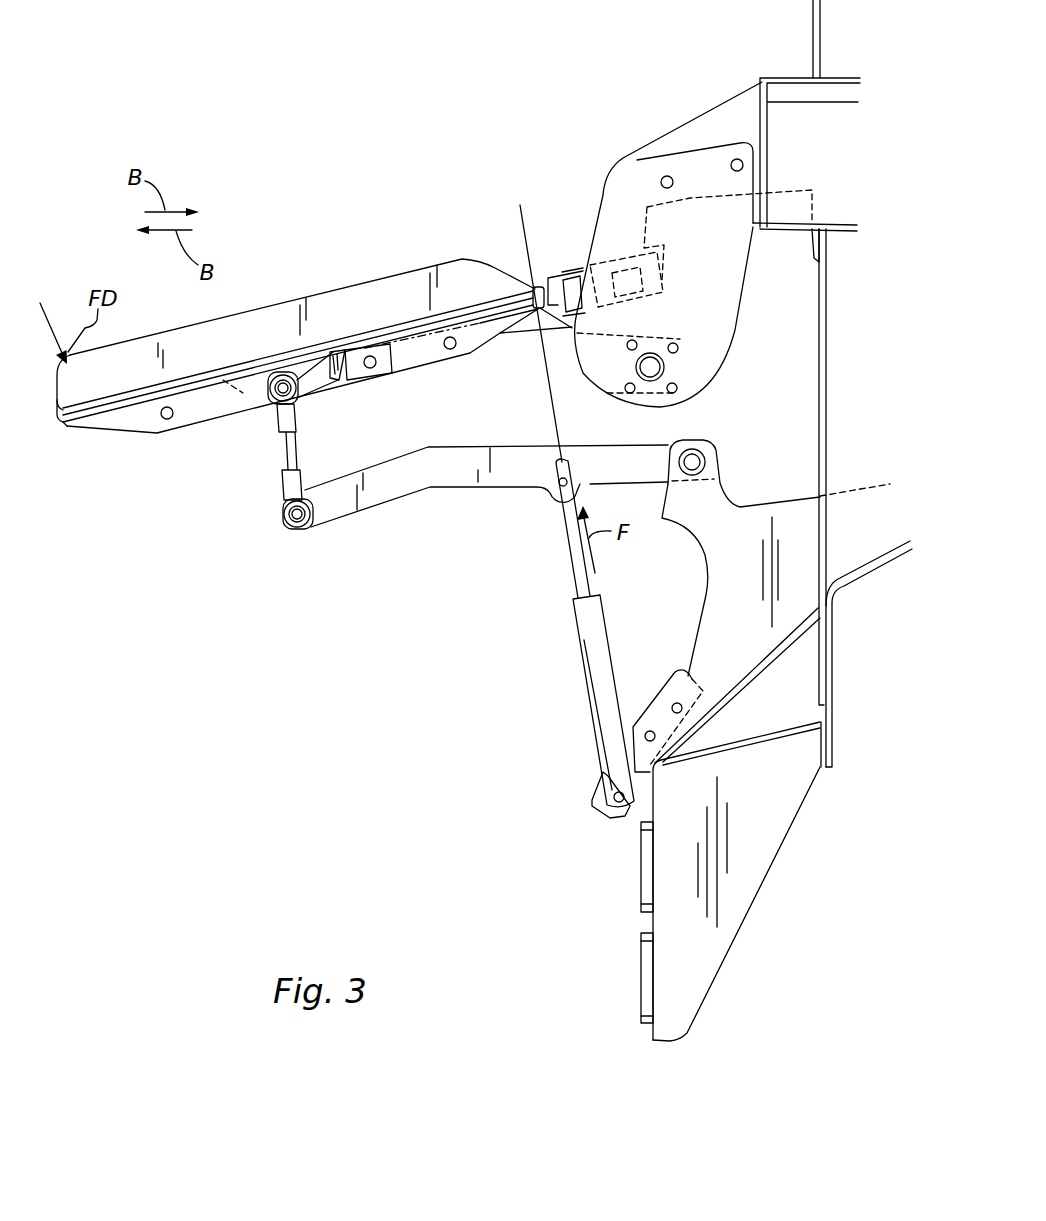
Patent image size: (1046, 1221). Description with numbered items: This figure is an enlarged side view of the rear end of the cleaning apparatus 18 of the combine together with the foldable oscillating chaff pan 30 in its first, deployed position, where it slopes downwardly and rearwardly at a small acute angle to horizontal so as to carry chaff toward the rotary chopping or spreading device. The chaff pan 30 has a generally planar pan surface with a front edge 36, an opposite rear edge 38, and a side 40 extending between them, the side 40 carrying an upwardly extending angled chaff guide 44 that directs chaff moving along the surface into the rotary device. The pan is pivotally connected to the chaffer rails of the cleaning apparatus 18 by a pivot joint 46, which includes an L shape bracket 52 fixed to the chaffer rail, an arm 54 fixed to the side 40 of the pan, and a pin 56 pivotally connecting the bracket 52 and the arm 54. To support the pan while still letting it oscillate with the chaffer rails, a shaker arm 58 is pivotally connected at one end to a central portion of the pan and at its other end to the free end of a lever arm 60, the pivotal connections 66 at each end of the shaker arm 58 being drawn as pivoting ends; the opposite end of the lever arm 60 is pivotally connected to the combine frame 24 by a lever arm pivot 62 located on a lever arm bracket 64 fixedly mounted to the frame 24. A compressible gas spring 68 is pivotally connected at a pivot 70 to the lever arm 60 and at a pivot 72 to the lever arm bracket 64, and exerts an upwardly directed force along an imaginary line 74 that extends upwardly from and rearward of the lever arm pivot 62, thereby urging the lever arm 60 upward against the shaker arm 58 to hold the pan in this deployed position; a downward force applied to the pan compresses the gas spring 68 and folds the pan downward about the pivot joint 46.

The cleaning apparatus 18 is at (840, 77).
The combine frame 24 is at (878, 567).
The chaff pan 30 is at (144, 447).
The front edge 36 is at (537, 288).
The rear edge 38 is at (63, 414).
The side 40 is at (195, 398).
The angled chaff guide 44 is at (177, 332).
The pivot joint 46 is at (673, 378).
The L shape bracket 52 is at (753, 240).
The arm 54 is at (497, 380).
The pin 56 is at (664, 366).
The shaker arm 58 is at (297, 452).
The lever arm 60 is at (423, 492).
The lever arm pivot 62 is at (708, 461).
The lever arm bracket 64 is at (706, 579).
The ball joint pivot 66 is at (287, 372).
The gas spring 68 is at (605, 634).
The pivot 70 is at (550, 503).
The pivot 72 is at (600, 810).
The imaginary line 74 is at (522, 240).